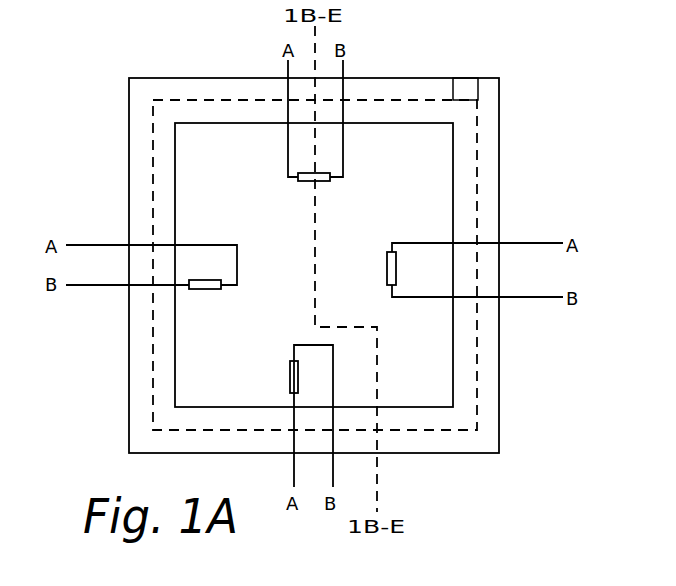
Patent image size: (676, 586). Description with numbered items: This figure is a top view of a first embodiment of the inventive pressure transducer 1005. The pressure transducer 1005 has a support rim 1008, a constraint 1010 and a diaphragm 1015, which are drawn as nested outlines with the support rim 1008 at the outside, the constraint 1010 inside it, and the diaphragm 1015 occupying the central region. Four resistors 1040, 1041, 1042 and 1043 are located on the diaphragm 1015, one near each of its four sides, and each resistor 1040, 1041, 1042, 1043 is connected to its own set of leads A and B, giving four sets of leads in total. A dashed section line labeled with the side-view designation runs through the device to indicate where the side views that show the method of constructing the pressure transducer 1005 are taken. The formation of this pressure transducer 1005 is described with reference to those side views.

The pressure transducer 1005 is at (618, 105).
The support rim 1008 is at (488, 215).
The constraint 1010 is at (463, 376).
The diaphragm 1015 is at (415, 183).
The resistor 1040 is at (307, 183).
The resistor 1041 is at (387, 267).
The resistor 1042 is at (290, 375).
The resistor 1043 is at (217, 291).